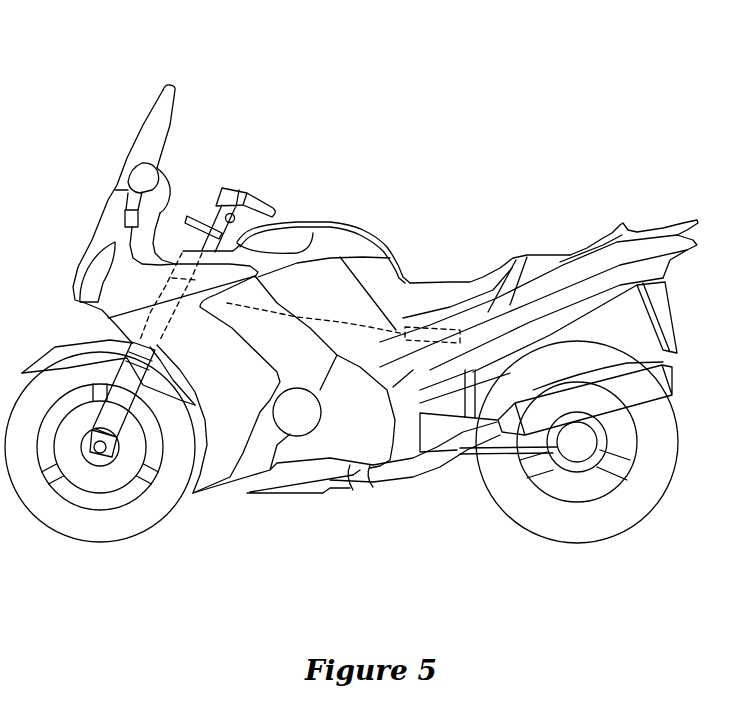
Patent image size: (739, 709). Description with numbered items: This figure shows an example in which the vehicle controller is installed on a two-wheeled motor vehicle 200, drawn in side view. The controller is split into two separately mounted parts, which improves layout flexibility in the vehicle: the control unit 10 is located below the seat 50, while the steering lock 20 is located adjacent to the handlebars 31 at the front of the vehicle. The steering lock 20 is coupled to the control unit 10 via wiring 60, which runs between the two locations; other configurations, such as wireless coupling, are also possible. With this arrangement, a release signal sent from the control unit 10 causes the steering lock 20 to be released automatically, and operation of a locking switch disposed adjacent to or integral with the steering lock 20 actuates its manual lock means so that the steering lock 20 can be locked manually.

The two-wheeled motor vehicle 200 is at (590, 103).
The handlebars 31 is at (185, 217).
The wiring 60 is at (343, 330).
The control unit 10 is at (416, 335).
The seat 50 is at (448, 280).
The steering lock 20 is at (178, 278).